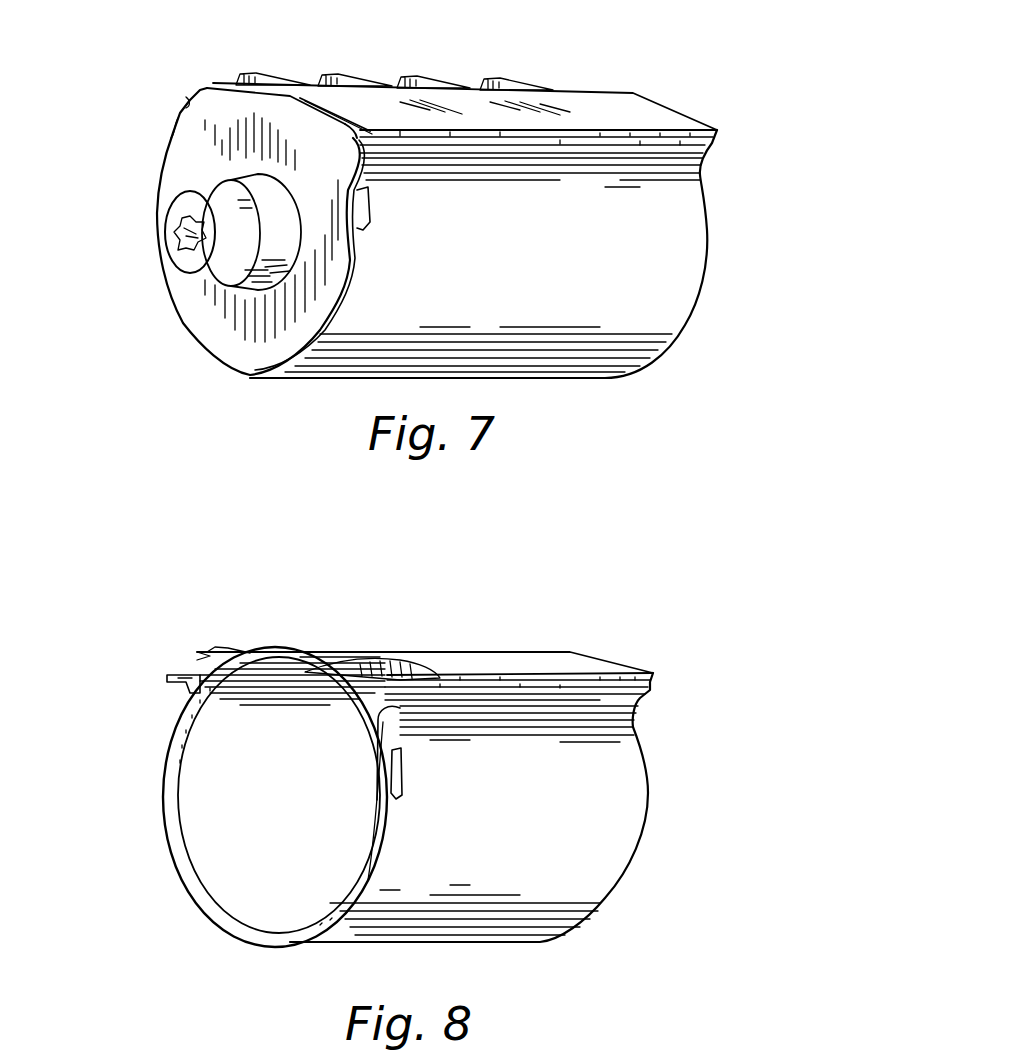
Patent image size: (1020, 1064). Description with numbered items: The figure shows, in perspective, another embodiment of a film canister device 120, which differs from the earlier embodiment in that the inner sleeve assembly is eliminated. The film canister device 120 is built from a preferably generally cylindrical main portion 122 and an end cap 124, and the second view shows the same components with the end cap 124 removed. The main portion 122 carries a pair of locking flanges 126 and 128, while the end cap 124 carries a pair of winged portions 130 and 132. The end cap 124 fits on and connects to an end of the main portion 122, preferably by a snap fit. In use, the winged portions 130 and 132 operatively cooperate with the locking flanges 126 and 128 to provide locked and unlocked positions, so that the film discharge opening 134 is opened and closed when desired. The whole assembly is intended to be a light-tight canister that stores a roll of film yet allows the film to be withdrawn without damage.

In FIG. 7, the film canister device 120 is at (479, 199).
In FIG. 8, the film canister device 120 is at (422, 797).
In FIG. 7, the main portion 122 is at (602, 264).
In FIG. 8, the main portion 122 is at (541, 850).
In FIG. 7, the end cap 124 is at (205, 88).
In FIG. 7, the locking flange 126 is at (185, 100).
In FIG. 8, the locking flange 126 is at (172, 694).
In FIG. 7, the locking flange 128 is at (372, 216).
In FIG. 8, the locking flange 128 is at (405, 770).
In FIG. 7, the winged portion 130 is at (176, 136).
In FIG. 7, the winged portion 132 is at (352, 135).
In FIG. 7, the film discharge opening 134 is at (728, 147).
In FIG. 8, the film discharge opening 134 is at (288, 774).